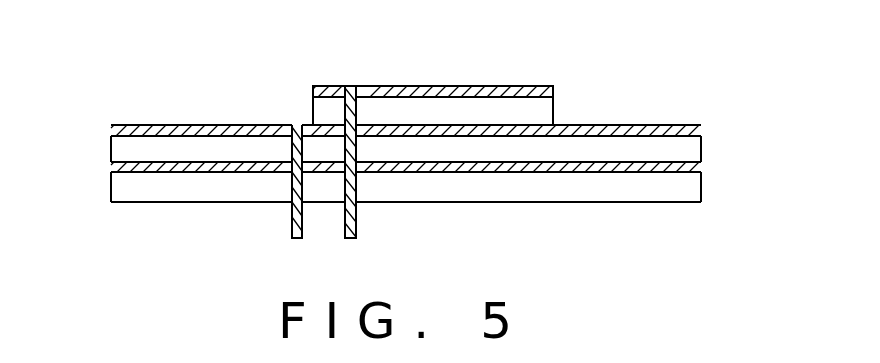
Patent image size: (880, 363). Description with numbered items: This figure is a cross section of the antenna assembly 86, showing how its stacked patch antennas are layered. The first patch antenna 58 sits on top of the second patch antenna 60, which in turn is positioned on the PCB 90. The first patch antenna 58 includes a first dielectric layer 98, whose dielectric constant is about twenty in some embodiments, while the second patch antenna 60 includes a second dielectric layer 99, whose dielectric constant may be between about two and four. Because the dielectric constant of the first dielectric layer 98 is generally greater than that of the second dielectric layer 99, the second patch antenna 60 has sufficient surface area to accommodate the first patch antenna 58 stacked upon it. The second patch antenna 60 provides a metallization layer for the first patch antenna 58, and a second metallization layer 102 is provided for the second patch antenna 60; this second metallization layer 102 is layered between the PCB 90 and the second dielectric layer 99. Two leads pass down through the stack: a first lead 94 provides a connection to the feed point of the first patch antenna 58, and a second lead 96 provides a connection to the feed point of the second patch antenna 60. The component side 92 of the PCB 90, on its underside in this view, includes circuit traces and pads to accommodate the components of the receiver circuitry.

The antenna assembly 86 is at (175, 70).
The first patch antenna 58 is at (540, 86).
The second patch antenna 60 is at (673, 125).
The PCB 90 is at (111, 185).
The component side 92 is at (583, 202).
The first lead 94 is at (345, 222).
The second lead 96 is at (292, 220).
The first dielectric layer 98 is at (313, 107).
The second dielectric layer 99 is at (111, 150).
The second metallization layer 102 is at (701, 165).